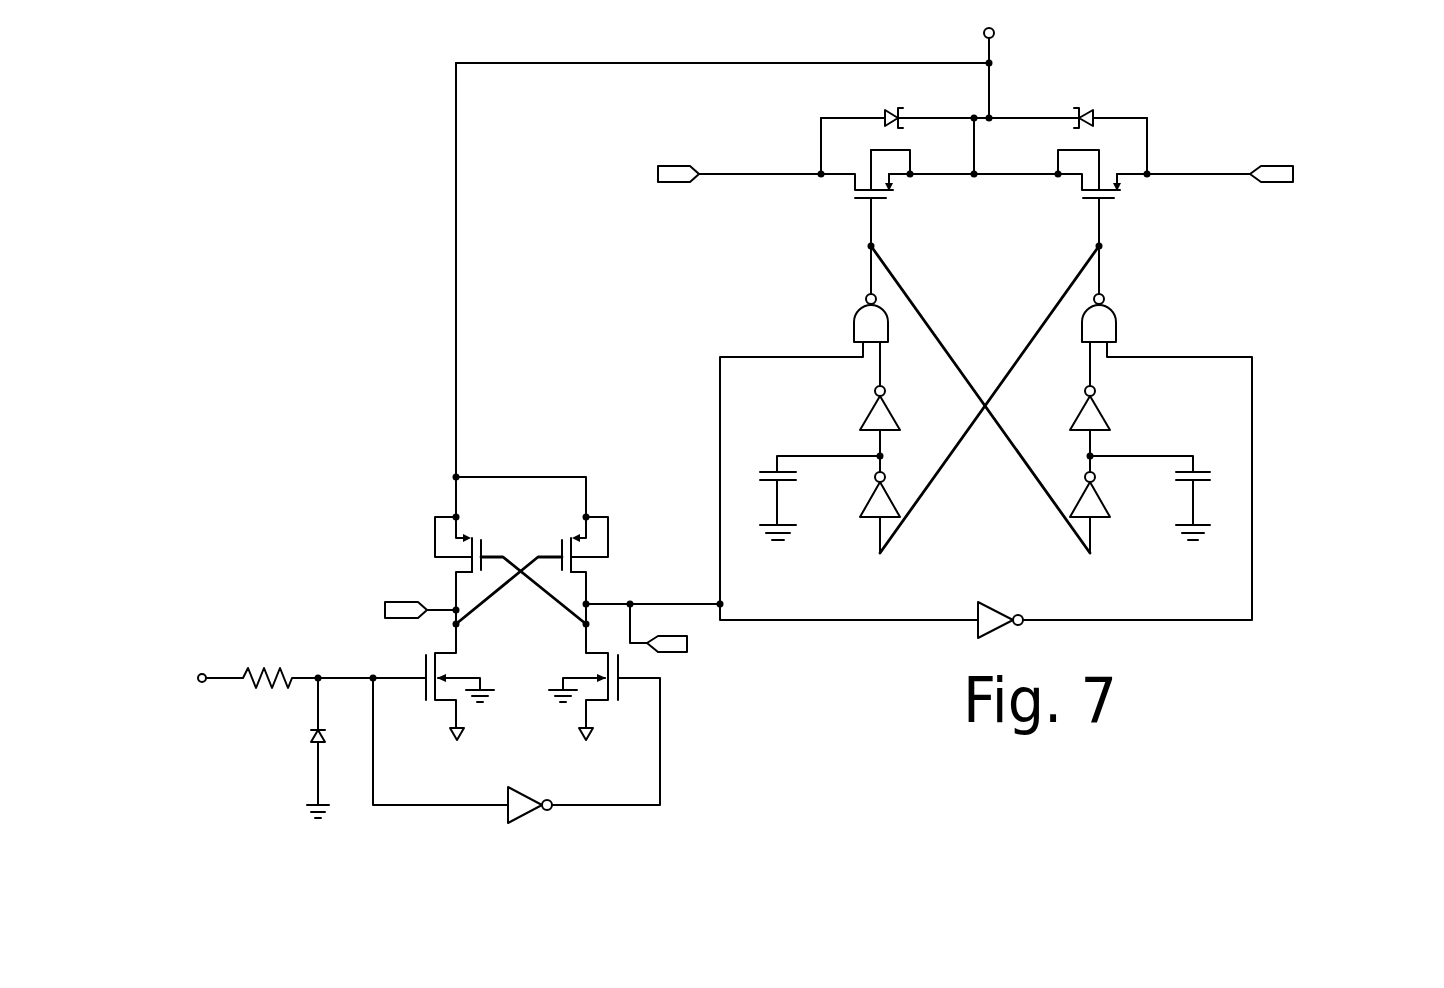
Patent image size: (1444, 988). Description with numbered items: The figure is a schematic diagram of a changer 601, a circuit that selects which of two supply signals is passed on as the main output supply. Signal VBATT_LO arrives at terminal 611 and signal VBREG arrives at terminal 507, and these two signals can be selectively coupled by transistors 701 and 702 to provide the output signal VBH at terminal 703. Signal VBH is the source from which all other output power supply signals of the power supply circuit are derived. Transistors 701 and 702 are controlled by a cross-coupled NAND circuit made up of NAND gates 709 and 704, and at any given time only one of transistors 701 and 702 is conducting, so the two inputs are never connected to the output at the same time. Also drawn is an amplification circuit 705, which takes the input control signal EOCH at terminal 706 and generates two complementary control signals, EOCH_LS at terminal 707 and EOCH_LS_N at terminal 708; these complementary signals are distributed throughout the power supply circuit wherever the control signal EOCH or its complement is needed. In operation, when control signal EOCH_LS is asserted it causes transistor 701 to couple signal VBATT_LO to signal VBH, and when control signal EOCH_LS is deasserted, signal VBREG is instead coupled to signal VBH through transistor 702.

The changer 601 is at (933, 319).
The transistor 701 is at (884, 200).
The transistor 702 is at (1086, 200).
The terminal 703 is at (992, 88).
The NAND gate 704 is at (1104, 299).
The NAND gate 709 is at (866, 299).
The amplification circuit 705 is at (551, 467).
The terminal 706 is at (228, 680).
The terminal 707 is at (657, 602).
The terminal 708 is at (430, 607).
The terminal 611 is at (729, 176).
The terminal 507 is at (1230, 176).